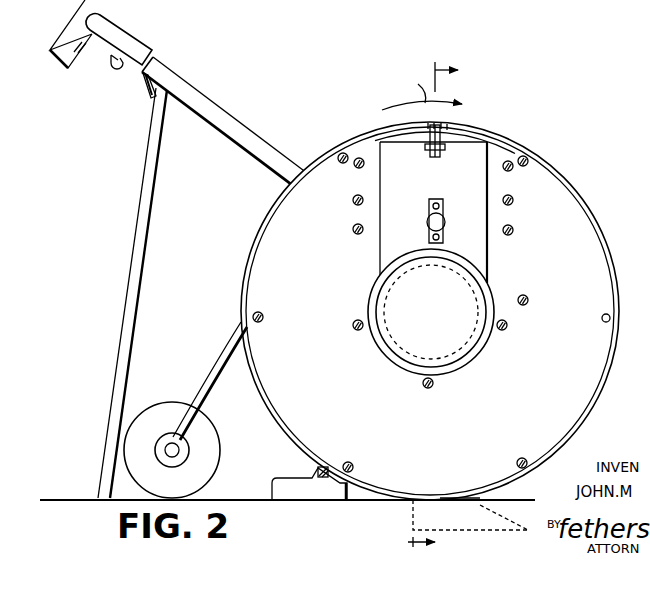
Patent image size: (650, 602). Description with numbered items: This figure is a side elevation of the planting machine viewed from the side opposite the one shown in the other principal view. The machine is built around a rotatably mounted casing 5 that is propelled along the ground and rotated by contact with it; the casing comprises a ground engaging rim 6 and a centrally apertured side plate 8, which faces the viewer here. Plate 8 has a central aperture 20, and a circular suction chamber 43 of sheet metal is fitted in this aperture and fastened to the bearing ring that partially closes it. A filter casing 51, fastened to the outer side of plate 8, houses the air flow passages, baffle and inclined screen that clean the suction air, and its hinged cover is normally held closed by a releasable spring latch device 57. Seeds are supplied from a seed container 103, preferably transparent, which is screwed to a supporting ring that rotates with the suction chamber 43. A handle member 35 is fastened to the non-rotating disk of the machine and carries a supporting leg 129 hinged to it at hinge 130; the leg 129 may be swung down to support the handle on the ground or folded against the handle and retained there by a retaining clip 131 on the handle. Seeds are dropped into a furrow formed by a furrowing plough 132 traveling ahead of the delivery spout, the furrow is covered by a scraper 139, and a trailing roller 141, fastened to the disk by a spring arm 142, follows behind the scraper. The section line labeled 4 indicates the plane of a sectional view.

The casing 5 is at (336, 139).
The ground engaging rim 6 is at (563, 175).
The side plate 8 is at (564, 219).
The central aperture 20 is at (384, 358).
The handle member 35 is at (217, 123).
The suction chamber 43 is at (458, 364).
The filter casing 51 is at (396, 238).
The spring latch device 57 is at (430, 151).
The seed container 103 is at (454, 295).
The supporting leg 129 is at (121, 330).
The hinge 130 is at (153, 86).
The retaining clip 131 is at (115, 72).
The furrowing plough 132 is at (483, 500).
The scraper 139 is at (293, 478).
The trailing roller 141 is at (162, 404).
The spring arm 142 is at (231, 333).
The section line 4- 4 is at (455, 308).